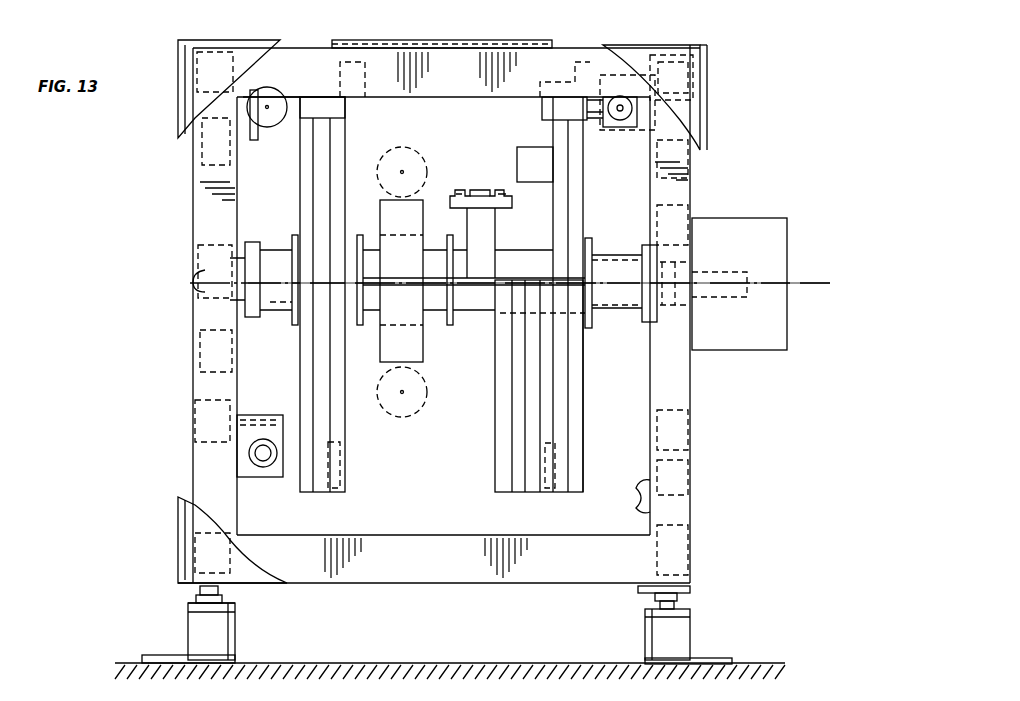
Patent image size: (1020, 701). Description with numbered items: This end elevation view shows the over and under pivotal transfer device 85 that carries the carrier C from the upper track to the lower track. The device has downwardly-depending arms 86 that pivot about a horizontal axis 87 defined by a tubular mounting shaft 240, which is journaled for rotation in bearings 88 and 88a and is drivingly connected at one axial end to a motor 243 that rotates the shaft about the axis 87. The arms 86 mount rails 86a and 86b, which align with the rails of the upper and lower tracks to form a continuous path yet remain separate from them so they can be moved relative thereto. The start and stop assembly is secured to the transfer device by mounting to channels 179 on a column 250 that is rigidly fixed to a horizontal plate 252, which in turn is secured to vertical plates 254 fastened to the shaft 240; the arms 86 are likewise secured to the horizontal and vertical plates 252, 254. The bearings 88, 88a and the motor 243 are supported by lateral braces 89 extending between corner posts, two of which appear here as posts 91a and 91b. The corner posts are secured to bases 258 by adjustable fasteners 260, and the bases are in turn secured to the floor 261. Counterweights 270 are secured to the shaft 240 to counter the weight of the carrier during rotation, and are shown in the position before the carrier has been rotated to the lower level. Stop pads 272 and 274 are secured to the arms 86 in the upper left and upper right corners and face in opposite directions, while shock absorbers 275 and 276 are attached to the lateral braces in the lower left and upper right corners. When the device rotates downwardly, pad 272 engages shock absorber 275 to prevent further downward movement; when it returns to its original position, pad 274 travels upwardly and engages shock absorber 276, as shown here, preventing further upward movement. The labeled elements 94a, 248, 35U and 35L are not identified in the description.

The transfer device 85 is at (755, 165).
The arms 86 is at (333, 150).
The rail 86a is at (357, 62).
The rail 86b is at (548, 62).
The axis 87 is at (803, 283).
The bearing 88 is at (193, 252).
The bearing 88a is at (725, 268).
The lateral brace 89 is at (210, 345).
The corner post 91a is at (193, 200).
The corner post 91b is at (693, 192).
The clamp member 94a is at (455, 182).
The channels 179 is at (492, 185).
The shaft 240 is at (268, 255).
The motor 243 is at (748, 352).
The flange 248 is at (606, 250).
The column 250 is at (495, 228).
The horizontal plate 252 is at (545, 276).
The vertical plates 254 is at (430, 330).
The bases 258 is at (237, 640).
The adjustable fasteners 260 is at (228, 596).
The floor 261 is at (585, 663).
The counterweights 270 is at (495, 478).
The stop pad 272 is at (280, 122).
The stop pad 274 is at (622, 130).
The shock absorber 275 is at (258, 460).
The shock absorber 276 is at (608, 55).
The upper roller 35U is at (396, 148).
The lower roller 35L is at (420, 410).
The carrier C is at (420, 45).